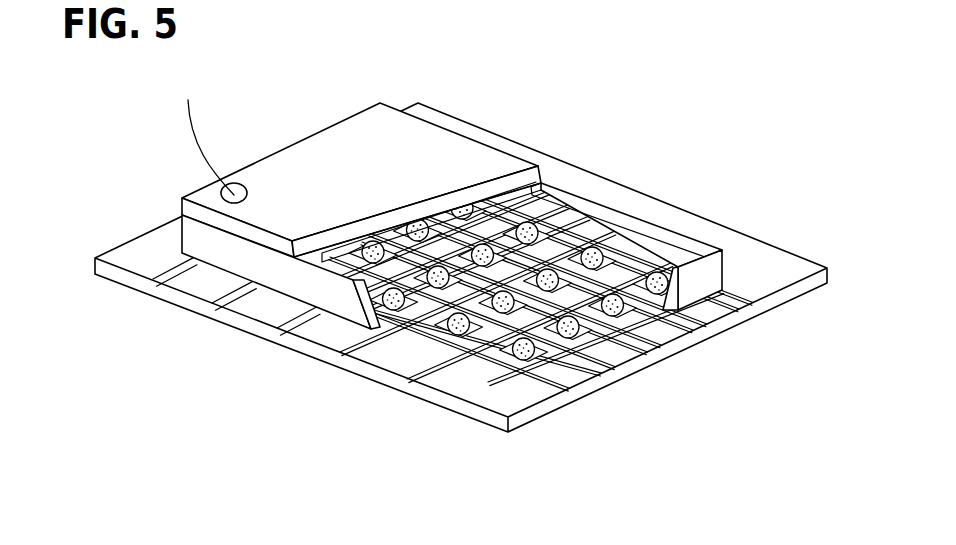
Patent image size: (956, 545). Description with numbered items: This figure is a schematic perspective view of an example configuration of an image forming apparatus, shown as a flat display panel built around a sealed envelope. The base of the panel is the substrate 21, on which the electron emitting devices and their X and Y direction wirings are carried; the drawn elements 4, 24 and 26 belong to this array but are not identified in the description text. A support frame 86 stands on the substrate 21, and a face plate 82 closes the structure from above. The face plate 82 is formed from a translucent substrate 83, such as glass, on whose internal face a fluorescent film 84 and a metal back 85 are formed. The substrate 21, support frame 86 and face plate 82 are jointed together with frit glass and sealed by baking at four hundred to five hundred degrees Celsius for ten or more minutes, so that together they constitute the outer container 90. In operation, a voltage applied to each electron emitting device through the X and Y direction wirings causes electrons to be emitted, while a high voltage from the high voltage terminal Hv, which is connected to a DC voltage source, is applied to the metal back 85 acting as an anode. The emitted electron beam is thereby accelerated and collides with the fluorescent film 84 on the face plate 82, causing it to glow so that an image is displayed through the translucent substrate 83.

The outer container 90 is at (767, 142).
The substrate 21 is at (505, 400).
The electrode pads 24 is at (545, 352).
The wiring lines 26 is at (443, 363).
The solder bumps 4 is at (627, 312).
The face plate 82 is at (588, 60).
The translucent substrate 83 is at (402, 218).
The fluorescent film 84 is at (442, 215).
The metal back 85 is at (473, 210).
The support frame 86 is at (631, 220).